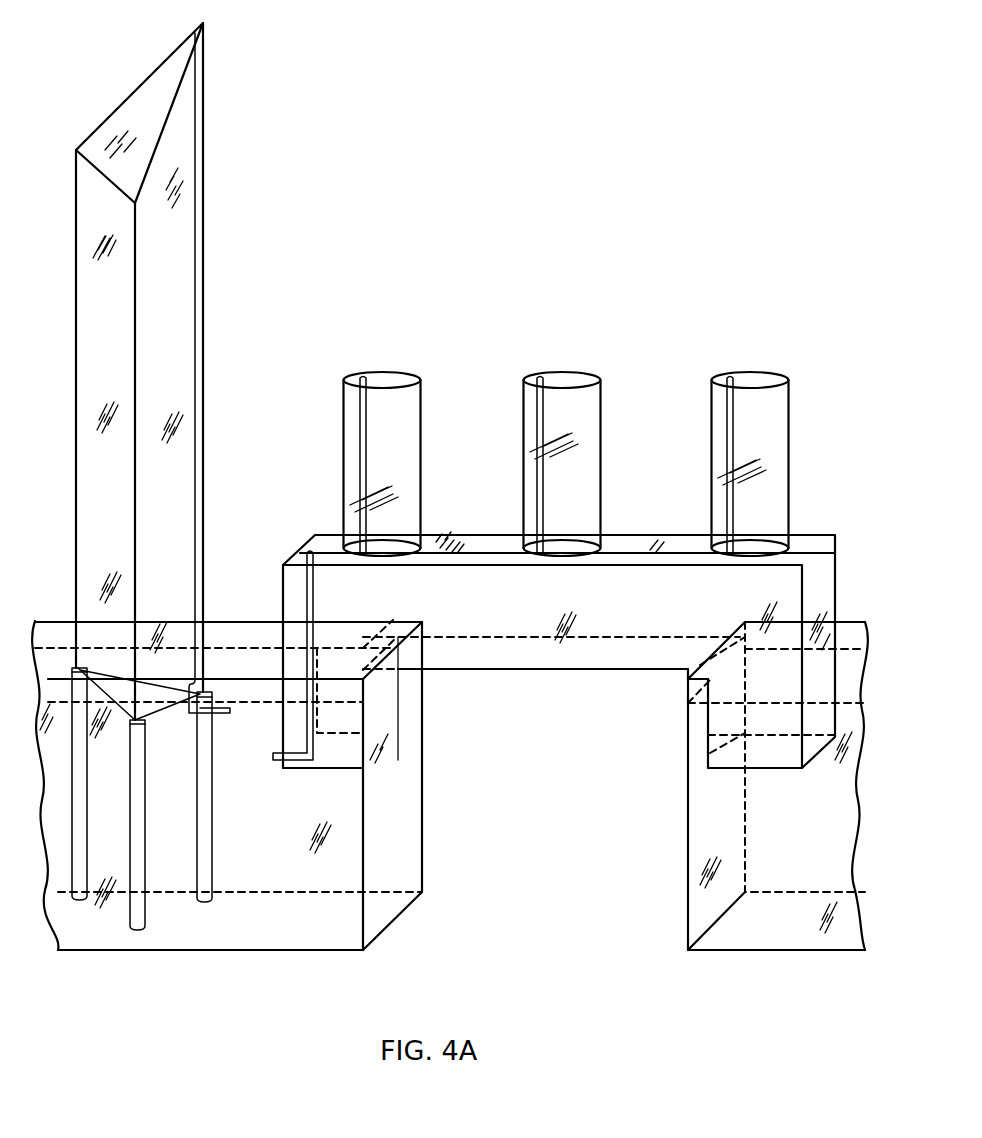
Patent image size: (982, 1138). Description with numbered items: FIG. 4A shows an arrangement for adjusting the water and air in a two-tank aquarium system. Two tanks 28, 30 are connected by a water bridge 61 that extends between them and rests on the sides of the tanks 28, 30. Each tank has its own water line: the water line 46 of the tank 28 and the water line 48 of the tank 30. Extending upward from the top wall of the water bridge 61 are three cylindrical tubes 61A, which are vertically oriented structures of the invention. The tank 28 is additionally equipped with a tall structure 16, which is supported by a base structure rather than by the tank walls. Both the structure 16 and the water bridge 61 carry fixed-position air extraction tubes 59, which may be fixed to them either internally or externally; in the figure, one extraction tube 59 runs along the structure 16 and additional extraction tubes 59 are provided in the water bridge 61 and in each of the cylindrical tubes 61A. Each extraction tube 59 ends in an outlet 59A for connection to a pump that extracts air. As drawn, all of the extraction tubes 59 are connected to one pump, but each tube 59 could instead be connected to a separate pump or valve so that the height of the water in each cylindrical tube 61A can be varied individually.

The structure 16 is at (237, 107).
The tank 28 is at (377, 940).
The tank 30 is at (686, 905).
The water line of tank 28 46 is at (243, 640).
The water line of tank 30 48 is at (845, 645).
The air extraction tube 59 is at (203, 305).
The outlet 59A is at (213, 700).
The water bridge 61 is at (472, 527).
The cylindrical tube 61A is at (345, 428).